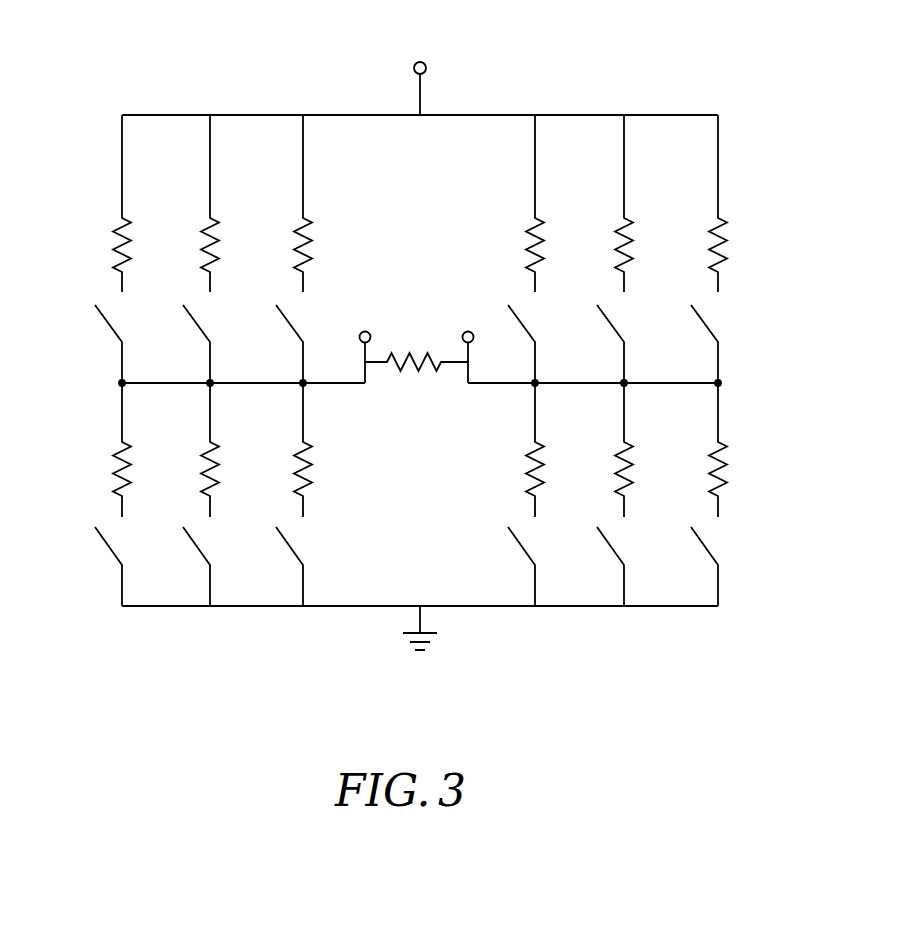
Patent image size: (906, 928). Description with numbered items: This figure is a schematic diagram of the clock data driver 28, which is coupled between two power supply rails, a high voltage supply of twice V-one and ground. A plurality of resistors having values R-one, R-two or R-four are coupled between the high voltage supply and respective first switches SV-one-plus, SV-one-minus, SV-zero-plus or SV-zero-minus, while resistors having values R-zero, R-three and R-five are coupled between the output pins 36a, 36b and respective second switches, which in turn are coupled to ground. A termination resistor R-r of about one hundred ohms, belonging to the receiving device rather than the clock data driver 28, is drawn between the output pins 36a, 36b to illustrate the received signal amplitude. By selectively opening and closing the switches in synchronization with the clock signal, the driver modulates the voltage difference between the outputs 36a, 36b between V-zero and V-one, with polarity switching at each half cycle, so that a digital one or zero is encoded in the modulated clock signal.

The clock data driver 28 is at (409, 330).
The output pin 36a is at (383, 328).
The output pin 36b is at (449, 328).